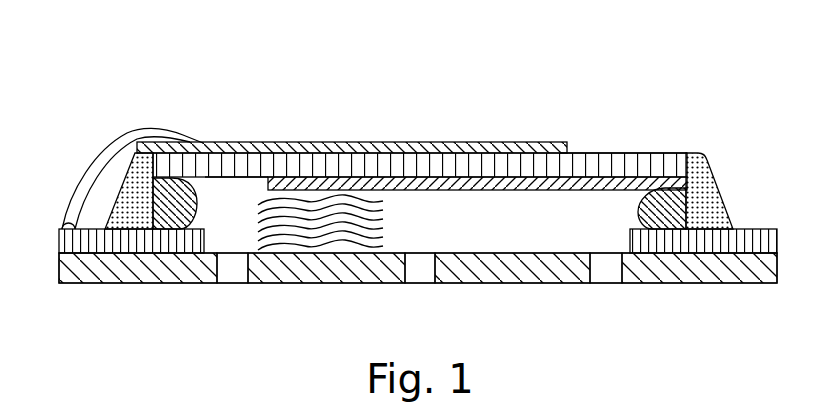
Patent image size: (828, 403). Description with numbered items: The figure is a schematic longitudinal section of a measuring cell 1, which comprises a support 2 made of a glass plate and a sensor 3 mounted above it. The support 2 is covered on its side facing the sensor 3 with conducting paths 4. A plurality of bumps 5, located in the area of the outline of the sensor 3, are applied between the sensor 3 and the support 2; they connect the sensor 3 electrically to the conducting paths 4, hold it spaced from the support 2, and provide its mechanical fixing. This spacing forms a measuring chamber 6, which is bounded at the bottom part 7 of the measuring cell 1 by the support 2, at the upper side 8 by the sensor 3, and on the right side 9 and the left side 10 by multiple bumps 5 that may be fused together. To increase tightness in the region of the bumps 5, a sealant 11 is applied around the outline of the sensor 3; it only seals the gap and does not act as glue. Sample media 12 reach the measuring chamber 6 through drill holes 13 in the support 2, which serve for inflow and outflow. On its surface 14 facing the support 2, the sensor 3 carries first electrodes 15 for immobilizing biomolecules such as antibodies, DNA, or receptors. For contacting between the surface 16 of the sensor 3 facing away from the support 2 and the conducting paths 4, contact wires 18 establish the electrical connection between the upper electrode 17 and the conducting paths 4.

The measuring cell 1 is at (158, 54).
The support 2 is at (51, 274).
The sensor 3 is at (638, 160).
The conducting paths 4 is at (747, 229).
The bumps 5 is at (678, 195).
The measuring chamber 6 is at (405, 225).
The bottom part 7 is at (309, 328).
The upper side 8 is at (371, 131).
The right side 9 is at (773, 142).
The left side 10 is at (35, 178).
The sealant 11 is at (713, 172).
The sample media 12 is at (303, 232).
The drill holes 13 is at (603, 270).
The surface facing towards the support 14 is at (232, 184).
The first electrodes 15 is at (503, 197).
The surface facing away from the support 16 is at (617, 146).
The upper electrode 17 is at (262, 142).
The contact wires 18 is at (125, 128).